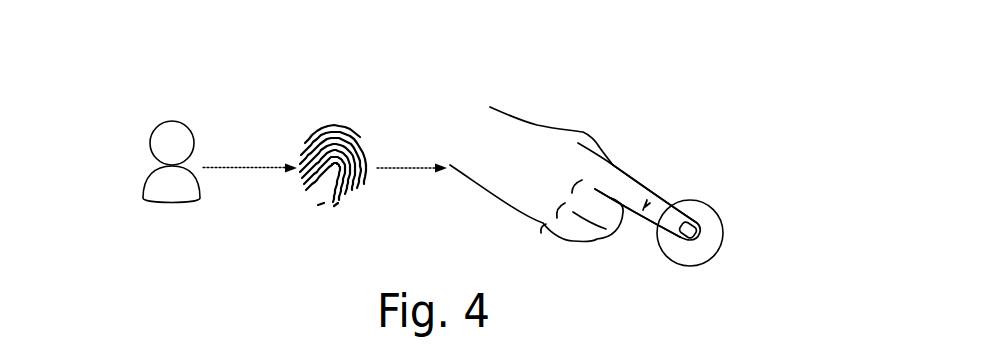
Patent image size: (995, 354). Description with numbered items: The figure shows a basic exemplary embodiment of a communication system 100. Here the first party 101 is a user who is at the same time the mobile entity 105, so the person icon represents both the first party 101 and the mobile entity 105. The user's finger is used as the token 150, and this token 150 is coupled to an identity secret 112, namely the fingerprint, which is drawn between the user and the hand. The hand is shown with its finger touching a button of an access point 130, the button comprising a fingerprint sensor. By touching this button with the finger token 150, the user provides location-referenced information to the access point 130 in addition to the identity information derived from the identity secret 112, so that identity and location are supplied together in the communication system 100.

The communication system 100 is at (490, 78).
The first party 101 is at (186, 112).
The mobile entity 105 is at (134, 183).
The identity secret 112 is at (307, 212).
The access point 130 is at (733, 257).
The token 150 is at (663, 182).